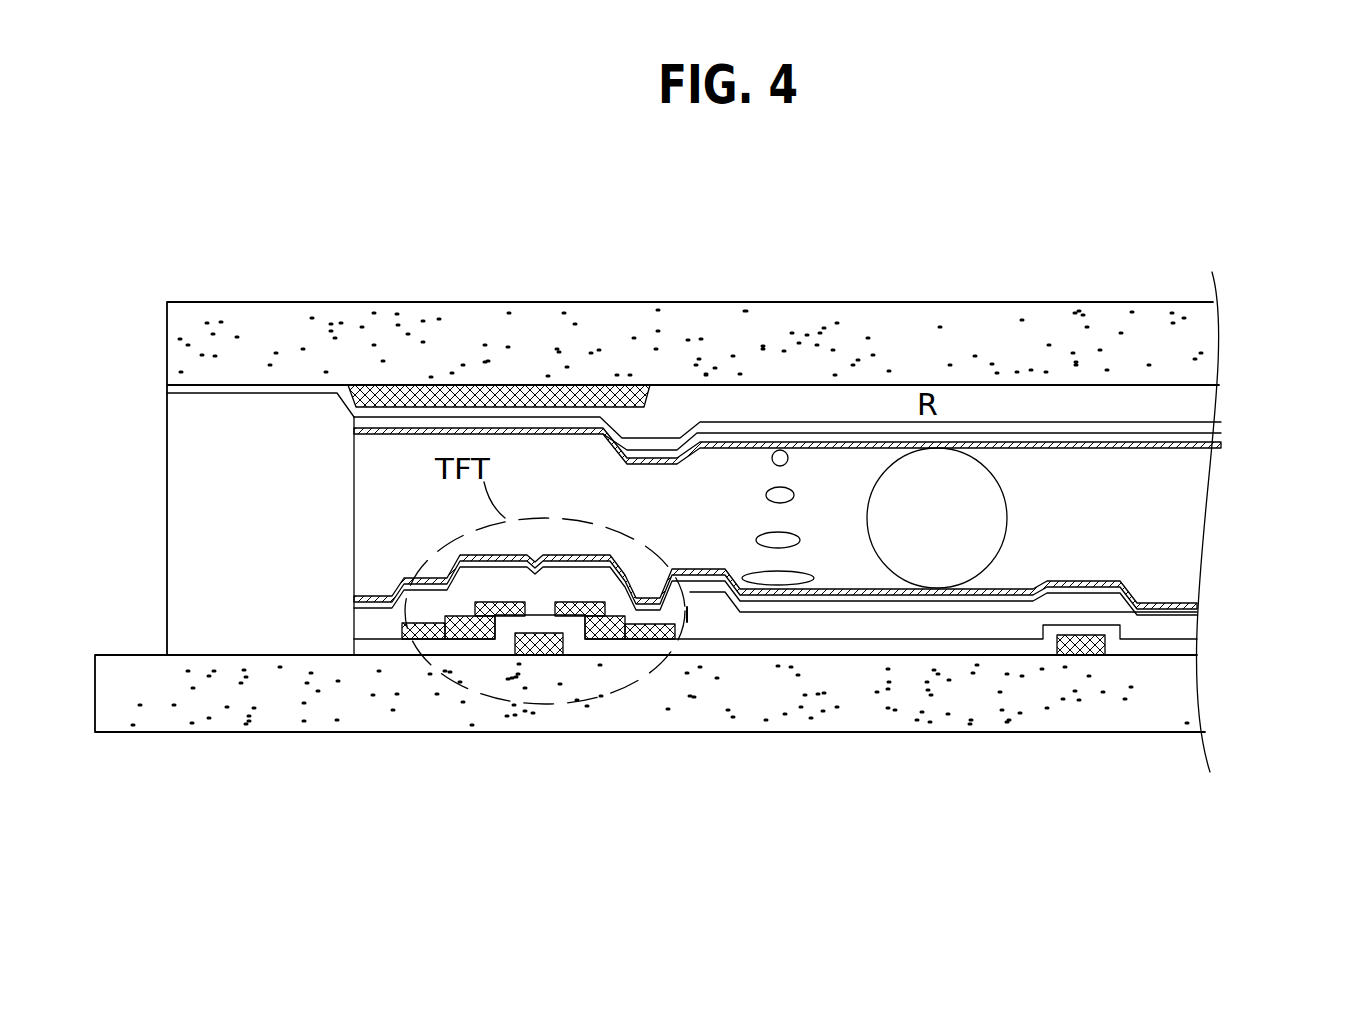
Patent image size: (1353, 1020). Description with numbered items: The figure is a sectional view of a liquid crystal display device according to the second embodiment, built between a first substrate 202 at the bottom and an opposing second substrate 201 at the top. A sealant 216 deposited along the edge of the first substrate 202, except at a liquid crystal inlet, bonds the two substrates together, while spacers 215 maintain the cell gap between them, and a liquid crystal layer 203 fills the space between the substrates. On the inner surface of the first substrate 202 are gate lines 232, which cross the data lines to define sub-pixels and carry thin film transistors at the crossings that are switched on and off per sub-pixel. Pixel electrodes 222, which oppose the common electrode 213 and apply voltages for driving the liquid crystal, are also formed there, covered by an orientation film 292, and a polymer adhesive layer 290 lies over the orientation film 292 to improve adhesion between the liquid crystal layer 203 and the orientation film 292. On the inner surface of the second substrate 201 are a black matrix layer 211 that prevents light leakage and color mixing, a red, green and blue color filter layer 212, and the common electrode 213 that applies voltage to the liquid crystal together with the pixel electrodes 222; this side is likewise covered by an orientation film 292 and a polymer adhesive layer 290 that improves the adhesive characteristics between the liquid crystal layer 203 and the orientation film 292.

The second substrate 201 is at (1222, 343).
The first substrate 202 is at (1198, 690).
The liquid crystal layer 203 is at (1200, 530).
The black matrix layer 211 is at (478, 387).
The color filter layer 212 is at (1216, 393).
The common electrode 213 is at (1130, 428).
The spacer 215 is at (995, 520).
The sealant 216 is at (178, 507).
The pixel electrode 222 is at (686, 597).
The gate line 232 is at (1078, 660).
The polymer adhesive layer 290 is at (1222, 447).
The orientation film 292 is at (1222, 436).